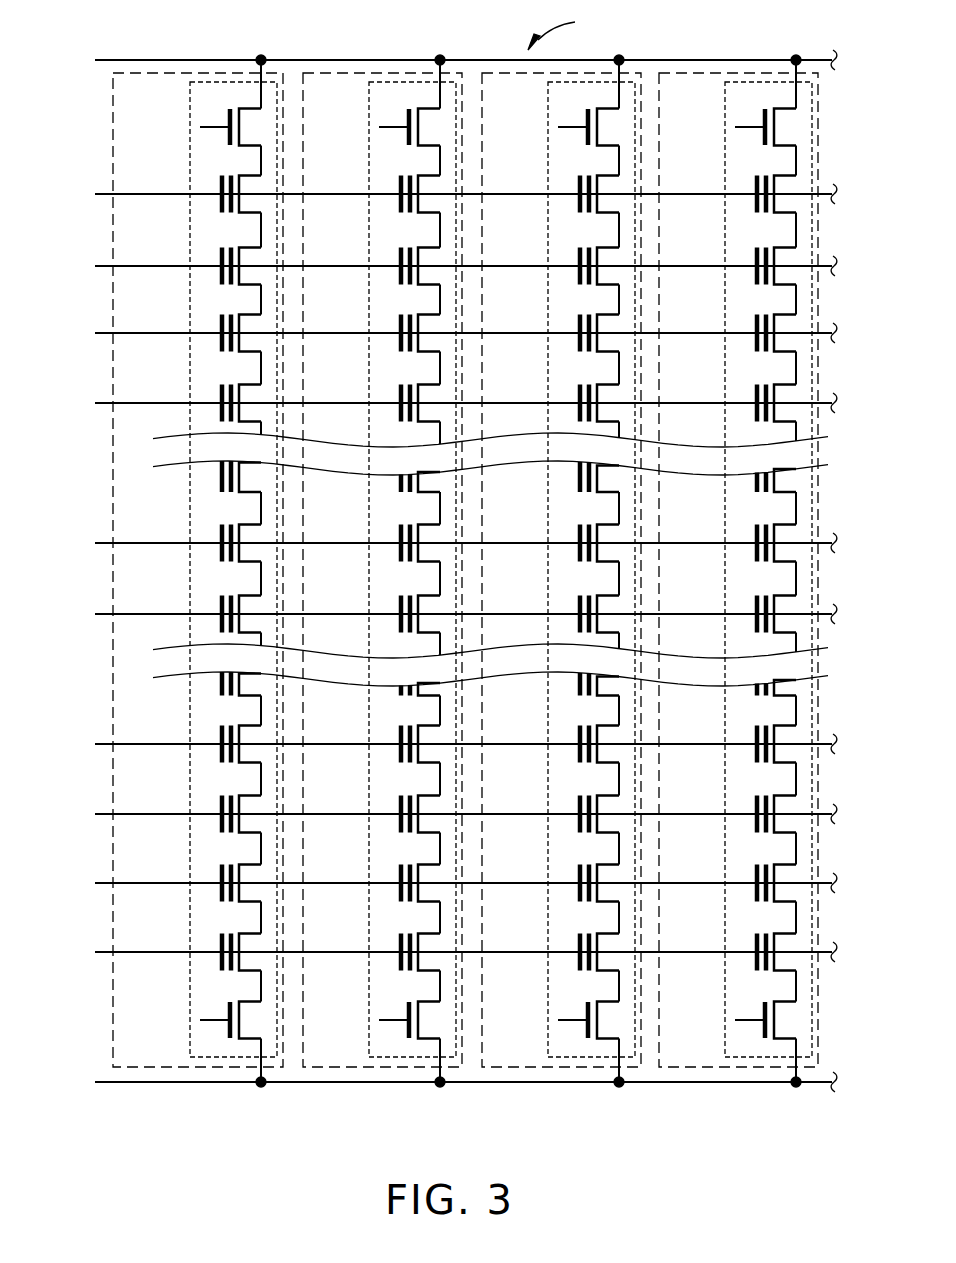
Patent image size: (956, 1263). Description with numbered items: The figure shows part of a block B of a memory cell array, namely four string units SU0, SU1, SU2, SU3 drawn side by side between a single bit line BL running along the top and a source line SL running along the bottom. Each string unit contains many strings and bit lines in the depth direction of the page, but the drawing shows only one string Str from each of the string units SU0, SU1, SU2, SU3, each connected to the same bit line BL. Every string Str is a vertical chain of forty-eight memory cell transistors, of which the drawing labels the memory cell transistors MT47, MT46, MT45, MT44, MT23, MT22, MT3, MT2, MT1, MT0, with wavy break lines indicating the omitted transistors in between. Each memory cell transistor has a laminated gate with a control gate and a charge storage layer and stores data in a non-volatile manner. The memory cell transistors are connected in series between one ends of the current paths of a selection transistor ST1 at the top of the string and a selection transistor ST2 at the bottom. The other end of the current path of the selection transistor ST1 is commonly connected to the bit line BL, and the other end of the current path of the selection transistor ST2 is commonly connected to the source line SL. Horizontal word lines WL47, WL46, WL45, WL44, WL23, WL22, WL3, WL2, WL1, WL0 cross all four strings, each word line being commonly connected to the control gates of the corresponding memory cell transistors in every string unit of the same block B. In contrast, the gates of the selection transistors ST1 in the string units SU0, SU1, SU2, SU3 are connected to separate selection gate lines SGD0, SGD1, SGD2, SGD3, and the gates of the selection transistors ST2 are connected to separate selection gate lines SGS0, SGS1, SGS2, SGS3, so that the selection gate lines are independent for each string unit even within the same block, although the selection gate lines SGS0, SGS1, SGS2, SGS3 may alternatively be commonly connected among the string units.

The block B is at (561, 26).
The bit line BL is at (446, 60).
The source line SL is at (446, 1082).
The word line WL47 is at (435, 194).
The word line WL46 is at (435, 266).
The word line WL45 is at (435, 333).
The word line WL44 is at (435, 403).
The word line WL23 is at (435, 543).
The word line WL22 is at (435, 614).
The word line WL3 is at (435, 744).
The word line WL2 is at (435, 814).
The word line WL1 is at (435, 883).
The word line WL0 is at (435, 952).
The string unit SU0 is at (133, 1067).
The string unit SU1 is at (326, 1067).
The string unit SU2 is at (505, 1067).
The string unit SU3 is at (682, 1067).
The string Str is at (215, 1057).
The selection transistor ST1 is at (228, 111).
The selection transistor ST2 is at (228, 1008).
The selection gate line SGD0 is at (178, 127).
The selection gate line SGD1 is at (357, 127).
The selection gate line SGD2 is at (536, 127).
The selection gate line SGD3 is at (713, 127).
The selection gate line SGS0 is at (178, 1020).
The selection gate line SGS1 is at (357, 1020).
The selection gate line SGS2 is at (536, 1020).
The selection gate line SGS3 is at (713, 1020).
The memory cell transistor MT47 is at (220, 180).
The memory cell transistor MT46 is at (220, 252).
The memory cell transistor MT45 is at (220, 319).
The memory cell transistor MT44 is at (220, 389).
The memory cell transistor MT23 is at (220, 529).
The memory cell transistor MT22 is at (220, 600).
The memory cell transistor MT3 is at (220, 730).
The memory cell transistor MT2 is at (220, 800).
The memory cell transistor MT1 is at (220, 869).
The memory cell transistor MT0 is at (220, 938).